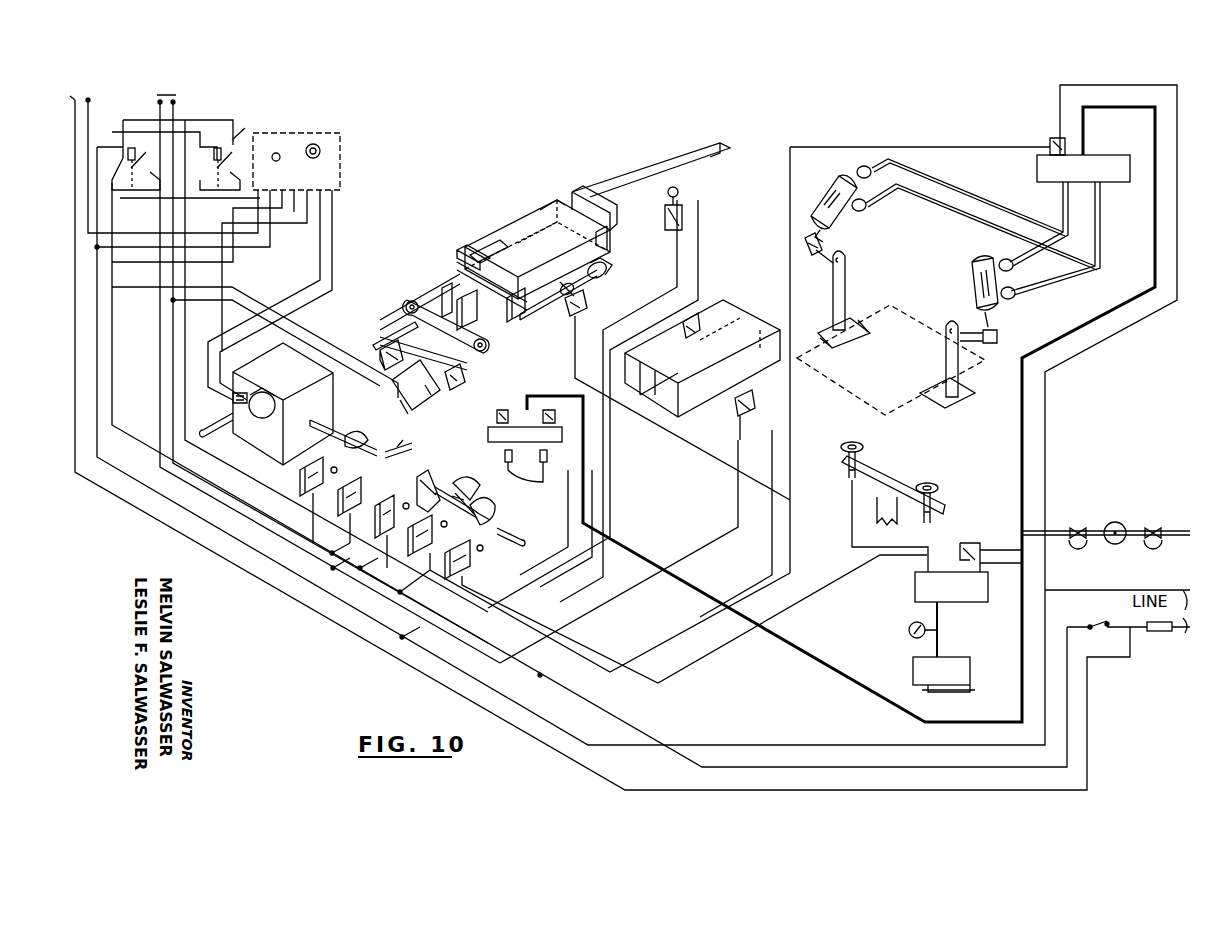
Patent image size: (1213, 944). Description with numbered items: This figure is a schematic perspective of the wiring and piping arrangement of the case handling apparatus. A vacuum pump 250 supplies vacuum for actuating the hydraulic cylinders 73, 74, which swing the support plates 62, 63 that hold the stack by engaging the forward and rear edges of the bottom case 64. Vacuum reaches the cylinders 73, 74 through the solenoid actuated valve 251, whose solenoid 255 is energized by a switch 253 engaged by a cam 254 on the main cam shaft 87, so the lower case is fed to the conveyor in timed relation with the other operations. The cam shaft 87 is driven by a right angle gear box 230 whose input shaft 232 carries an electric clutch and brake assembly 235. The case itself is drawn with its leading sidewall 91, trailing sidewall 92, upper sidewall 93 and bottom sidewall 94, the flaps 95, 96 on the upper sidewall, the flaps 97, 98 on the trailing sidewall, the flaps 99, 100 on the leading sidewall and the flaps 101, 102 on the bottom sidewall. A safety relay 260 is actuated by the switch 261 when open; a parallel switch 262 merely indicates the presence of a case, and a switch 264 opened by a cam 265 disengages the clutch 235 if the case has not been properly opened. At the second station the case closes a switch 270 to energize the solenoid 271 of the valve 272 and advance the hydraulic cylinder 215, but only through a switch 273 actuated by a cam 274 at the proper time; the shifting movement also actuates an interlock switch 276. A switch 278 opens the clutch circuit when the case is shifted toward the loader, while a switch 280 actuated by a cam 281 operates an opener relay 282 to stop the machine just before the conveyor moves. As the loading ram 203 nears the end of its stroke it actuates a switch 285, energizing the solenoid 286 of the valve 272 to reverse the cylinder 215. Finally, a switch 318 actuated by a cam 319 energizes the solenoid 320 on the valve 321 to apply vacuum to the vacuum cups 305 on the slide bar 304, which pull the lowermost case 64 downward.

The relay 260 is at (118, 124).
The opener relay 282 is at (243, 128).
The solenoid 255 is at (1052, 138).
The solenoid actuated valve 251 is at (1097, 178).
The hydraulic cylinder 73 is at (826, 192).
The hydraulic cylinder 74 is at (974, 288).
The loading ram 203 is at (574, 190).
The flap 100 is at (548, 205).
The flap 96 is at (590, 205).
The switch 285 is at (686, 200).
The flap 95 is at (478, 250).
The leading sidewall 91 is at (497, 240).
The flap 98 is at (610, 244).
The flap 99 is at (465, 272).
The upper sidewall 93 is at (548, 261).
The trailing sidewall 92 is at (566, 300).
The flap 102 is at (605, 255).
The bottom sidewall 94 is at (575, 292).
The flap 97 is at (558, 318).
The flap 101 is at (520, 320).
The switch 261 is at (695, 318).
The switch 262 is at (728, 385).
The support plate 62 is at (855, 342).
The bottom case 64 is at (909, 350).
The support plate 63 is at (935, 388).
The switch 278 is at (383, 360).
The right angle gear box 230 is at (300, 385).
The switch 276 is at (466, 370).
The switch 270 is at (578, 336).
The solenoid 286 is at (549, 410).
The solenoid 271 is at (500, 410).
The valve 272 is at (500, 432).
The cam 274 is at (358, 432).
The hydraulic cylinder 215 is at (410, 412).
The cam 281 is at (402, 447).
The input shaft 232 is at (216, 436).
The switch 273 is at (310, 465).
The electric clutch and brake assembly 235 is at (249, 436).
The switch 280 is at (350, 490).
The cam 265 is at (443, 487).
The switch 264 is at (392, 525).
The cam 254 is at (470, 490).
The cam 319 is at (498, 513).
The main cam shaft 87 is at (524, 538).
The switch 253 is at (435, 534).
The switch 318 is at (472, 562).
The vacuum cups 305 is at (865, 440).
The slide bar 304 is at (878, 502).
The solenoid 320 is at (972, 537).
The valve 321 is at (968, 599).
The vacuum pump 250 is at (962, 683).